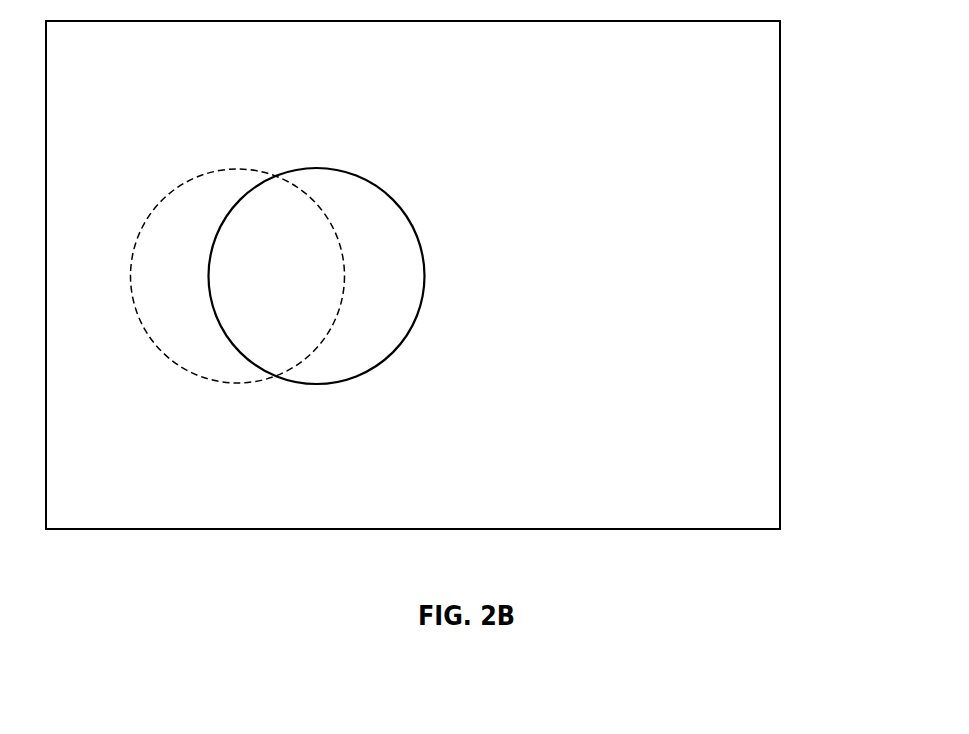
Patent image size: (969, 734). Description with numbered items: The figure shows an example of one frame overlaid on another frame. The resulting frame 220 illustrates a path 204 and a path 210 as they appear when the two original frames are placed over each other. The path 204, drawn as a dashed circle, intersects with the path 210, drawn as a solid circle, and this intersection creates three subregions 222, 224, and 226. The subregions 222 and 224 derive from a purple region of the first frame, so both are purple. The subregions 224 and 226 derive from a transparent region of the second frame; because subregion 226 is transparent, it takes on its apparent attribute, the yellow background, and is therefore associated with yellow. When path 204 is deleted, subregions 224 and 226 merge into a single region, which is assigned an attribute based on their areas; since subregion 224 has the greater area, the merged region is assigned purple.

The path 204 is at (173, 192).
The path 210 is at (418, 232).
The frame 220 is at (780, 478).
The subregion 222 is at (188, 288).
The subregion 224 is at (295, 288).
The subregion 226 is at (407, 288).